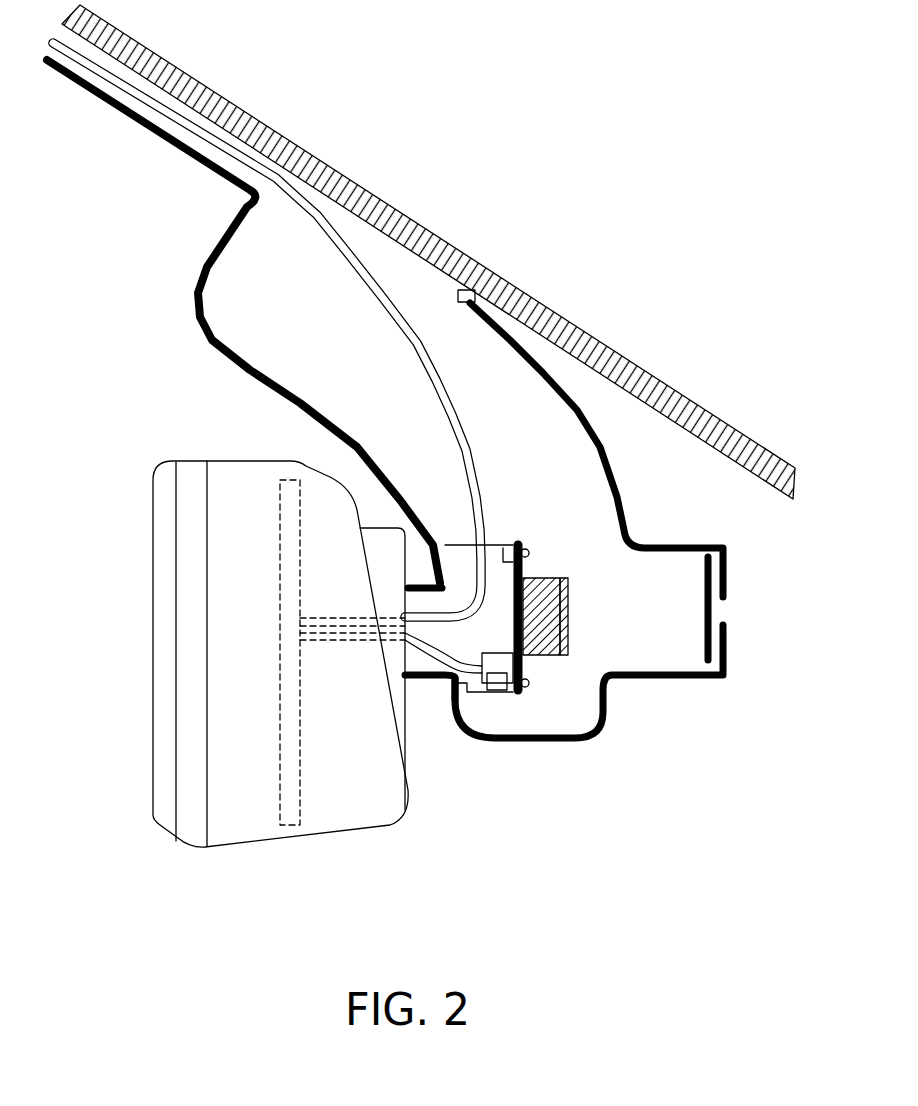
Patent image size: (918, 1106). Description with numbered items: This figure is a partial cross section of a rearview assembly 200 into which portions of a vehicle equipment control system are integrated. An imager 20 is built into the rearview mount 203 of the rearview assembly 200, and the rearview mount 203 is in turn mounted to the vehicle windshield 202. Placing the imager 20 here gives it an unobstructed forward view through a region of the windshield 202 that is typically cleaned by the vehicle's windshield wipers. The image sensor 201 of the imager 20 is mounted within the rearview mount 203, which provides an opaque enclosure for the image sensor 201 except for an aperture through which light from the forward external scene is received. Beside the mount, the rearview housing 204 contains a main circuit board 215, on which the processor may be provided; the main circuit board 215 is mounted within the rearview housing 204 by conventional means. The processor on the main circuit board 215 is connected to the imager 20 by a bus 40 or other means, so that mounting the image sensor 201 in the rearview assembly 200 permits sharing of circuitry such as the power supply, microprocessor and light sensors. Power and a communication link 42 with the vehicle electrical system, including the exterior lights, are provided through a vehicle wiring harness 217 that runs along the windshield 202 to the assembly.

The imager 20 is at (564, 571).
The bus 40 is at (433, 678).
The communication link 42 is at (468, 477).
The rearview assembly 200 is at (214, 692).
The image sensor 201 is at (512, 614).
The windshield 202 is at (508, 256).
The rearview mount 203 is at (234, 270).
The rearview housing 204 is at (150, 731).
The main circuit board 215 is at (300, 762).
The vehicle wiring harness 217 is at (444, 412).